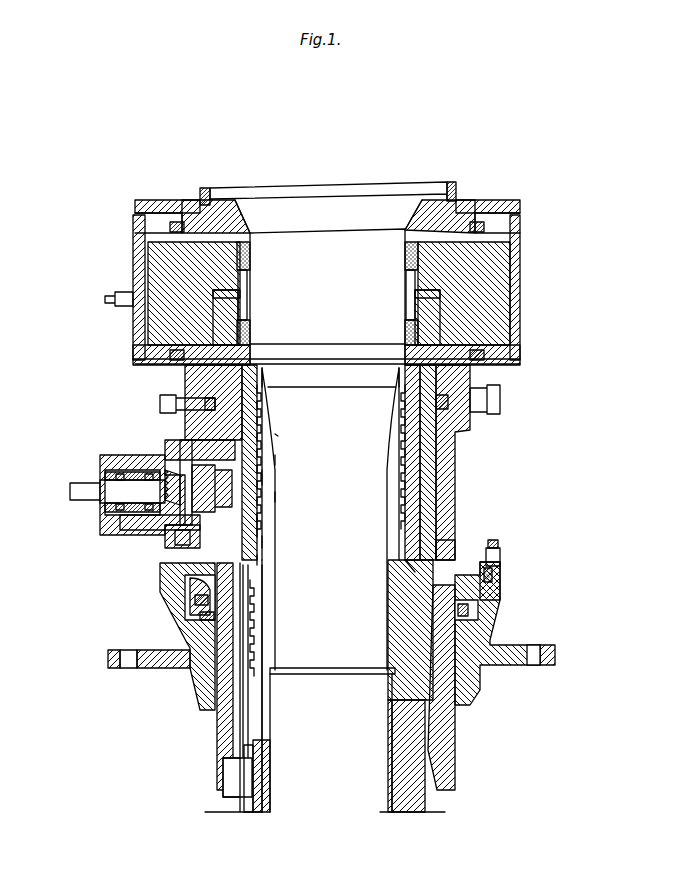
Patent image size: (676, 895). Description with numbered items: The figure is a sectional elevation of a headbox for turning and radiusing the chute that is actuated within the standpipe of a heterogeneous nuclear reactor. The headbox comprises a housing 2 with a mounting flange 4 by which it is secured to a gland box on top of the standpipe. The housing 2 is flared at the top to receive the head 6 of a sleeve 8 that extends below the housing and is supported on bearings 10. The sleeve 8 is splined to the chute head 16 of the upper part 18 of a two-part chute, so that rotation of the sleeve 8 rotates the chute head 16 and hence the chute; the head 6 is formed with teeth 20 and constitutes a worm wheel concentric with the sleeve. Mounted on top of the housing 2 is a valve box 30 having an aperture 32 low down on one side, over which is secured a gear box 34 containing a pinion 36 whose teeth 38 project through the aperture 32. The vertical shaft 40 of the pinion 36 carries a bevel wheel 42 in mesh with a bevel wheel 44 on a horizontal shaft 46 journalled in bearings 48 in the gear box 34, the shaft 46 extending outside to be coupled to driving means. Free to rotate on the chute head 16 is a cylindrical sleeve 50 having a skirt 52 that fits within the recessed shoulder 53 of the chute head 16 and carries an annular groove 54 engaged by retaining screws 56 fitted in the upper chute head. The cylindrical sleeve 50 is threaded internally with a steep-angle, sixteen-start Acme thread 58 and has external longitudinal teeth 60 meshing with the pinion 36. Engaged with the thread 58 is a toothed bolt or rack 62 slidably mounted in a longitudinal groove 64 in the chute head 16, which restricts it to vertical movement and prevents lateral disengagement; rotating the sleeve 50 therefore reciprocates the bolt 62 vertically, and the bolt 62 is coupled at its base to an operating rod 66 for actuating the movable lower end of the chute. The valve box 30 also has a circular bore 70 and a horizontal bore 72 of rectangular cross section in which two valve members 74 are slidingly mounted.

The housing 2 is at (145, 602).
The mounting flange 4 is at (172, 666).
The head 6 is at (165, 594).
The sleeve 8 is at (220, 742).
The bearings 10 is at (190, 620).
The chute head 16 is at (392, 618).
The upper part 18 is at (388, 741).
The teeth 20 is at (498, 610).
The valve box 30 is at (455, 488).
The aperture 32 is at (270, 478).
The gear box 34 is at (130, 528).
The pinion 36 is at (200, 508).
The teeth 38 is at (265, 525).
The vertical shaft 40 is at (183, 440).
The bevel wheel 42 is at (170, 535).
The bevel wheel 44 is at (170, 468).
The horizontal shaft 46 is at (105, 490).
The bearings 48 is at (120, 480).
The cylindrical sleeve 50 is at (390, 426).
The skirt 52 is at (268, 560).
The recessed shoulder 53 is at (268, 542).
The annular groove 54 is at (438, 544).
The retaining screws 56 is at (408, 566).
The thread 58 is at (276, 497).
The longitudinal teeth 60 is at (276, 460).
The toothed bolt 62 is at (258, 598).
The longitudinal groove 64 is at (264, 412).
The operating rod 66 is at (268, 776).
The bore 70 is at (248, 235).
The horizontal bore 72 is at (516, 300).
The valve members 74 is at (246, 315).